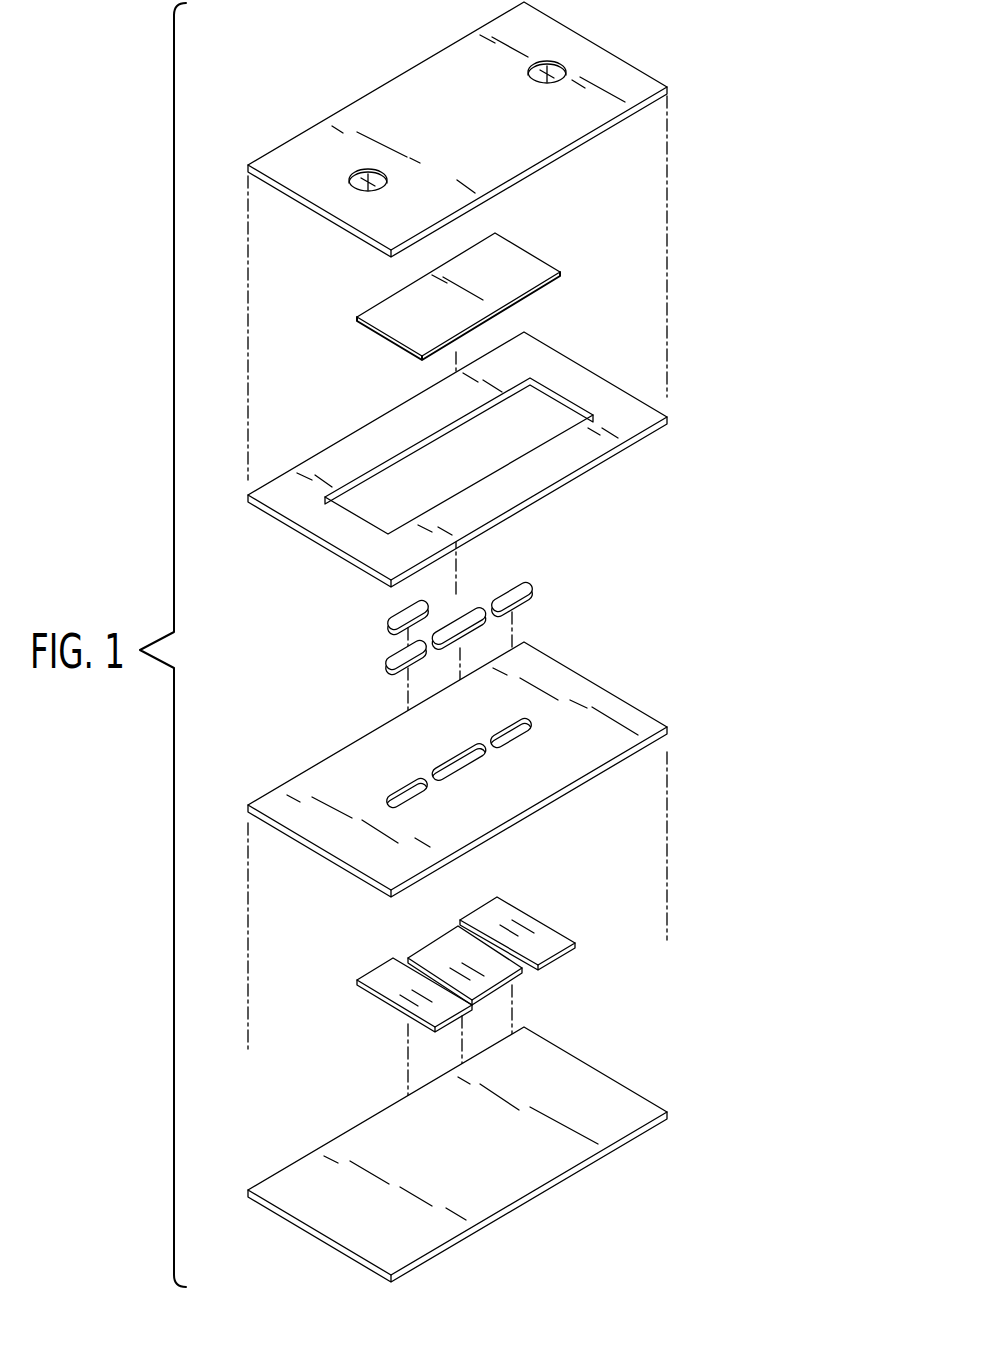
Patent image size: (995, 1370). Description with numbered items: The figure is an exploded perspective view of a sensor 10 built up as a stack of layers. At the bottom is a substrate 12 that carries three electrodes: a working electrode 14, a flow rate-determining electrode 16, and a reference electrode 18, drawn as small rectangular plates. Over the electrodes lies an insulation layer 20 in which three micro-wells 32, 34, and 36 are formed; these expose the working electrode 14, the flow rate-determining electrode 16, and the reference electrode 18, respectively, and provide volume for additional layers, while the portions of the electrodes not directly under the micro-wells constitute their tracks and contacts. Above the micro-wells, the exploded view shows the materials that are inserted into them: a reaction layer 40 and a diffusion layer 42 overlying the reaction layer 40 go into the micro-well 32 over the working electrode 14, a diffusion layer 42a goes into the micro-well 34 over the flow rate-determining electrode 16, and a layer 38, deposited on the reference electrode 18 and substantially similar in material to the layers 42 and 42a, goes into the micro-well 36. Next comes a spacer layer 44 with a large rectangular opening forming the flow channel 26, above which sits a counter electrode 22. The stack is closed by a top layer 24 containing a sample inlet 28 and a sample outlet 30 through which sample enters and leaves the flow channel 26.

The sensor 10 is at (711, 421).
The substrate 12 is at (586, 1079).
The working electrode 14 is at (401, 987).
The flow rate-determining electrode 16 is at (453, 949).
The reference electrode 18 is at (533, 932).
The insulation layer 20 is at (588, 690).
The counter electrode 22 is at (517, 267).
The top layer 24 is at (633, 85).
The flow channel 26 is at (542, 413).
The sample inlet 28 is at (362, 168).
The sample outlet 30 is at (548, 66).
The micro-well 32 is at (402, 793).
The micro-well 34 is at (452, 760).
The micro-well 36 is at (512, 726).
The layer 38 is at (508, 588).
The reaction layer 40 is at (403, 653).
The diffusion layer 42 is at (403, 610).
The diffusion layer 42a is at (478, 613).
The spacer layer 44 is at (382, 437).